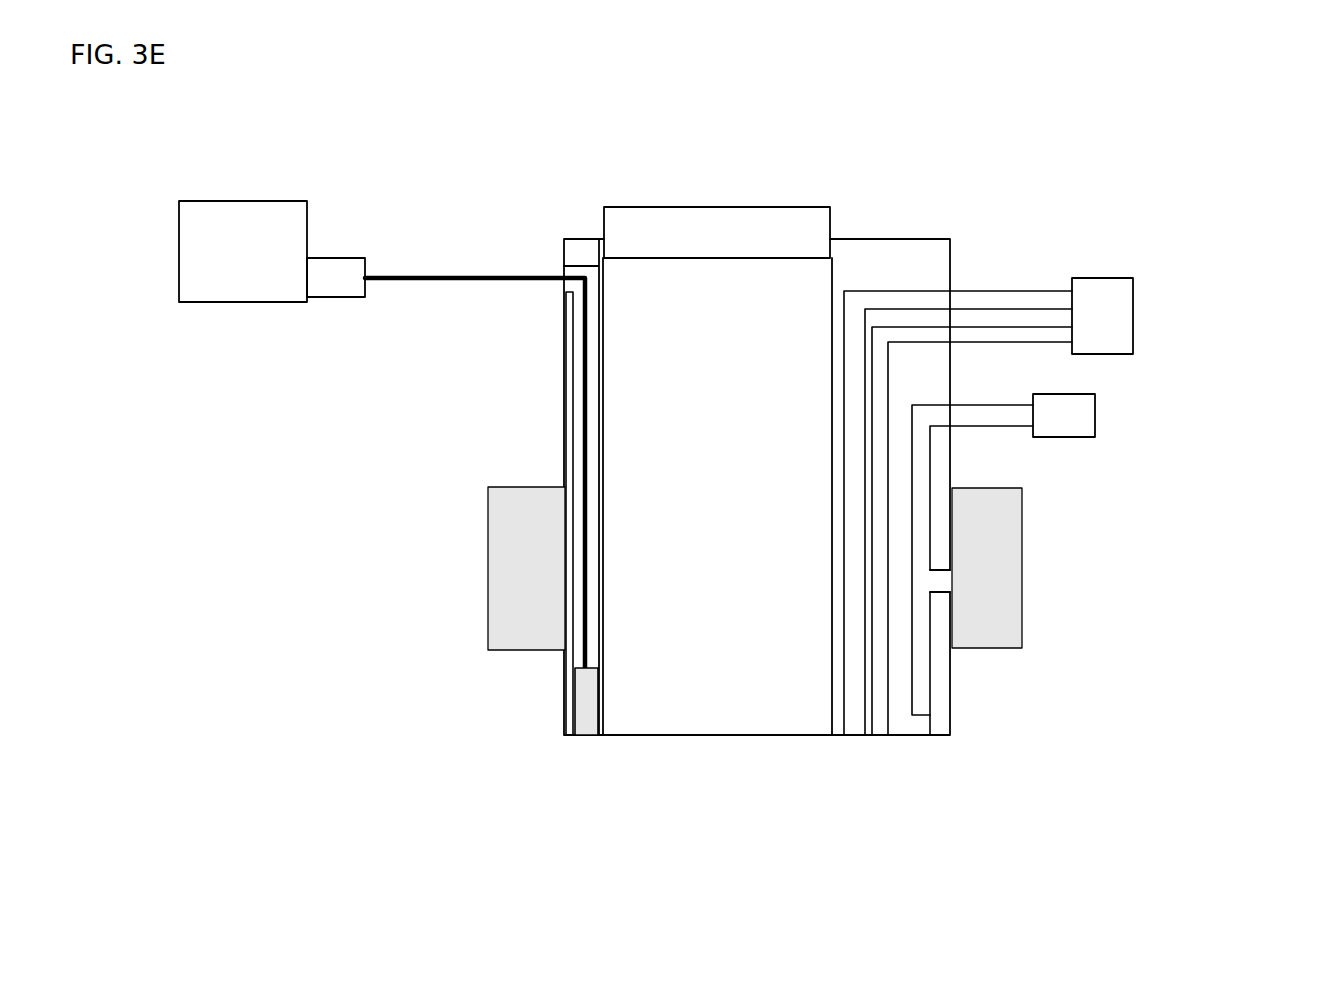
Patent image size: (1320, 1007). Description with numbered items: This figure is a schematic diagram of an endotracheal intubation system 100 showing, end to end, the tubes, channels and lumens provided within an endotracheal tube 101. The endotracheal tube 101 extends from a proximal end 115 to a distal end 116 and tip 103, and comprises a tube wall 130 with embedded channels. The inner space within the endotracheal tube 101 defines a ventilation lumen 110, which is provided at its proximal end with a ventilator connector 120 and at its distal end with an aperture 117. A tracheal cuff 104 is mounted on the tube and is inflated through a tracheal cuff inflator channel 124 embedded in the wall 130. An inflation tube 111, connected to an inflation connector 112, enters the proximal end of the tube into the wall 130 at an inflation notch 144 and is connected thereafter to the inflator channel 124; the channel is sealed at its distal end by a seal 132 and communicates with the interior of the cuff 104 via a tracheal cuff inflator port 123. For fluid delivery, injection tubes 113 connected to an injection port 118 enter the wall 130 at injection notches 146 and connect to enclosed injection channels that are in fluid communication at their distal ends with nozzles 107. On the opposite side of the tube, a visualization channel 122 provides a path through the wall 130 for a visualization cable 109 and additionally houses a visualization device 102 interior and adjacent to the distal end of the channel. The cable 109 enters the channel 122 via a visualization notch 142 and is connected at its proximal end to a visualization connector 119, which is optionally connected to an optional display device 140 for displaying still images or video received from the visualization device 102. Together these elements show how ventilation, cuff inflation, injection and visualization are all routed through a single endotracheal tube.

The endotracheal intubation system 100 is at (1079, 149).
The endotracheal tube 101 is at (565, 347).
The visualization device 102 is at (587, 723).
The tip 103 is at (950, 690).
The tracheal cuff 104 is at (1002, 578).
The nozzles 107 is at (857, 735).
The visualization cable 109 is at (517, 275).
The ventilation lumen 110 is at (663, 683).
The inflation tube 111 is at (995, 422).
The inflation connector 112 is at (1087, 417).
The injection tubes 113 is at (1042, 332).
The proximal end 115 is at (664, 170).
The distal end 116 is at (812, 800).
The aperture 117 is at (685, 735).
The injection port 118 is at (1117, 293).
The visualization connector 119 is at (345, 287).
The ventilator connector 120 is at (696, 220).
The visualization channel 122 is at (578, 457).
The tracheal cuff inflator port 123 is at (950, 580).
The tracheal cuff inflator channel 124 is at (922, 502).
The tube wall 130 is at (940, 672).
The seal 132 is at (922, 730).
The display device 140 is at (223, 210).
The visualization notch 142 is at (563, 270).
The inflation notch 144 is at (950, 405).
The injection notch 146 is at (952, 326).